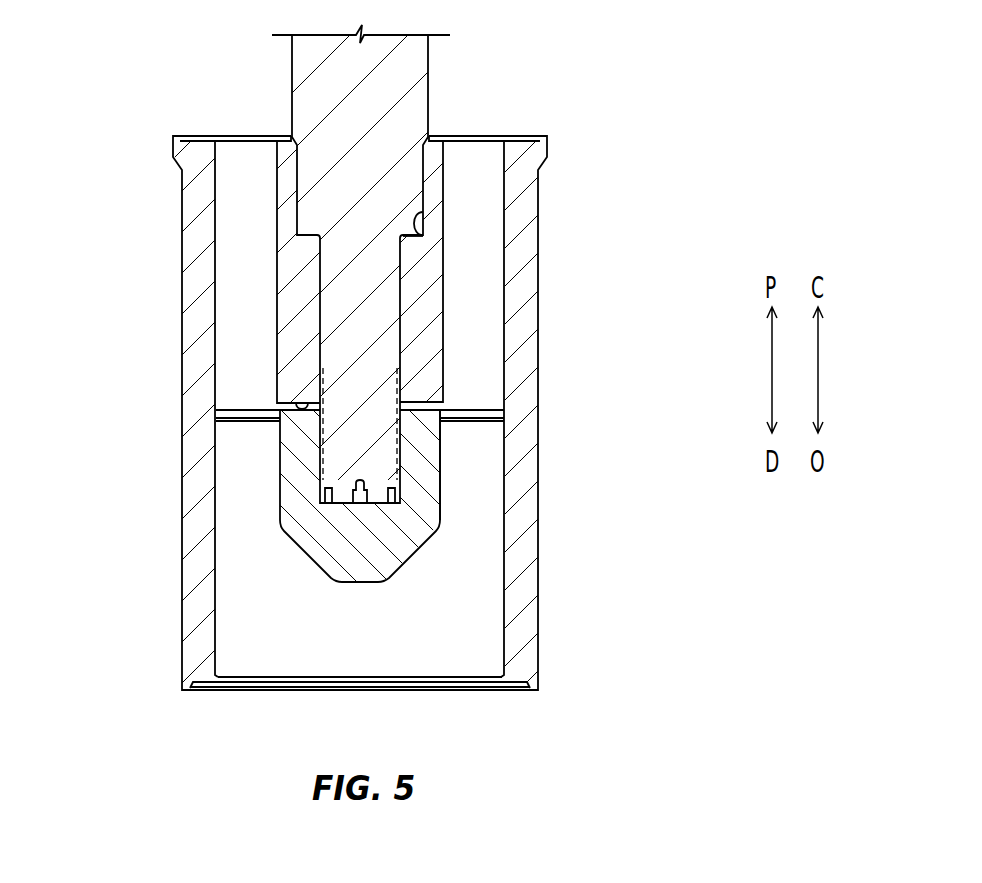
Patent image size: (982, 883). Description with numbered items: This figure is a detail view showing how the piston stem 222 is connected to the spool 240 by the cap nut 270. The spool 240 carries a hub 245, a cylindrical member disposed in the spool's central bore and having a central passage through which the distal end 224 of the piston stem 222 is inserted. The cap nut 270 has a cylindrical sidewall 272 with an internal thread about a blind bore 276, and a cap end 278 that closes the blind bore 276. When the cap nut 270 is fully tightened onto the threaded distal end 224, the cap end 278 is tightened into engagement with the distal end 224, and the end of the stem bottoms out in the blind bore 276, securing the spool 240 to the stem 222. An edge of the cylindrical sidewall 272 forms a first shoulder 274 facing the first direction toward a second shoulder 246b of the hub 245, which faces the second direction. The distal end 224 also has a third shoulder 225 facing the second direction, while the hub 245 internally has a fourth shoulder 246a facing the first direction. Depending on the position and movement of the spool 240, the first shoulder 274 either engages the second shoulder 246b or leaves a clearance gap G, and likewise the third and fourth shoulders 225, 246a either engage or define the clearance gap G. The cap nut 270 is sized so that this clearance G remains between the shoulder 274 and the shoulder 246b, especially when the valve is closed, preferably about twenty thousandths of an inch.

The piston stem 222 is at (428, 62).
The spool 240 is at (182, 215).
The distal end 224 is at (318, 343).
The hub 245 is at (447, 325).
The fourth shoulder 246a is at (425, 212).
The third shoulder 225 is at (421, 238).
The second shoulder 246b is at (299, 406).
The first shoulder 274 is at (430, 400).
The clearance gap G is at (280, 408).
The cap nut 270 is at (450, 504).
The cylindrical sidewall 272 is at (440, 450).
The cap end 278 is at (365, 582).
The blind bore 276 is at (325, 453).